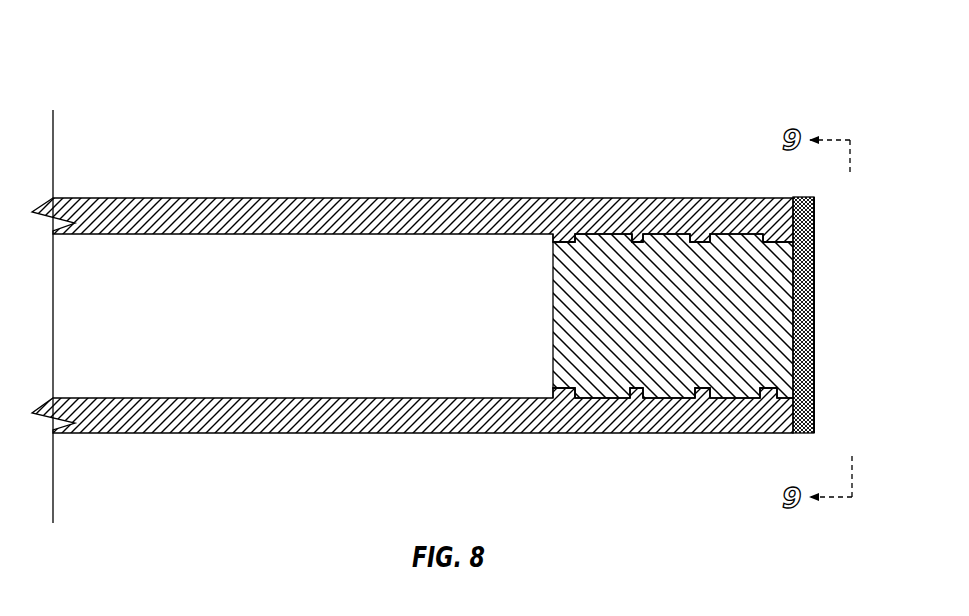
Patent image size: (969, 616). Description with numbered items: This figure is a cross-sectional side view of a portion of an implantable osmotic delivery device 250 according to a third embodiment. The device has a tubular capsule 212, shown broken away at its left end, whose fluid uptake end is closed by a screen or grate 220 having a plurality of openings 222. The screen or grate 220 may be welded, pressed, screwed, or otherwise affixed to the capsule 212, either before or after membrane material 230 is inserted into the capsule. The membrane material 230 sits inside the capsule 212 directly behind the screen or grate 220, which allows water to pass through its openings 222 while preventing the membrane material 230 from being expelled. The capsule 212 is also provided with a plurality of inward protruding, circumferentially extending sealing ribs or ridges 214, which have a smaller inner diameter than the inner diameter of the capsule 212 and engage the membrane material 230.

The osmotic delivery device 250 is at (272, 124).
The capsule 212 is at (157, 437).
The sealing ribs or ridges 214 is at (565, 240).
The membrane material 230 is at (553, 322).
The screen or grate 220 is at (818, 228).
The openings 222 is at (818, 283).